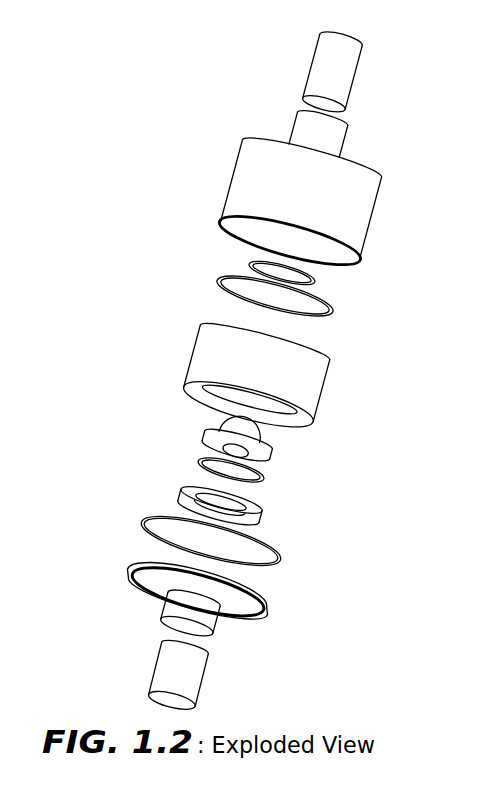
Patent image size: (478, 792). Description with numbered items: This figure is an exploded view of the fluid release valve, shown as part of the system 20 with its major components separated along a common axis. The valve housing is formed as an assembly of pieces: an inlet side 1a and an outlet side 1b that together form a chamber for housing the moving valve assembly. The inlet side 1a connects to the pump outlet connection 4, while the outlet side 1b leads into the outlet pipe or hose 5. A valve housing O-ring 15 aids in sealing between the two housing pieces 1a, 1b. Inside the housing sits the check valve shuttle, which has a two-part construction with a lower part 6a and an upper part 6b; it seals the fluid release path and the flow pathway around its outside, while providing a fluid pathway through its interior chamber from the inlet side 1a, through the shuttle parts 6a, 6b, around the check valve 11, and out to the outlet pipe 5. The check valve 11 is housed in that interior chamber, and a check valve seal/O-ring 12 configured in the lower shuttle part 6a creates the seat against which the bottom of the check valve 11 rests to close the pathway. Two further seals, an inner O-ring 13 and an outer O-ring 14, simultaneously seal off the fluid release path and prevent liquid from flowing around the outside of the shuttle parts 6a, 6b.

The system 20 is at (133, 85).
The outlet pipe or hose 5 is at (309, 72).
The outlet side of the valve housing 1b is at (232, 174).
The inner O-ring seal 13 is at (250, 266).
The outer O-ring seal 14 is at (218, 293).
The CV shuttle upper part 6b is at (187, 369).
The check valve 11 is at (273, 449).
The check valve seal/O-ring 12 is at (200, 462).
The CV shuttle lower part 6a is at (181, 497).
The valve housing O-ring 15 is at (141, 523).
The inlet side of the valve housing 1a is at (128, 580).
The pump outlet connection 4 is at (153, 682).